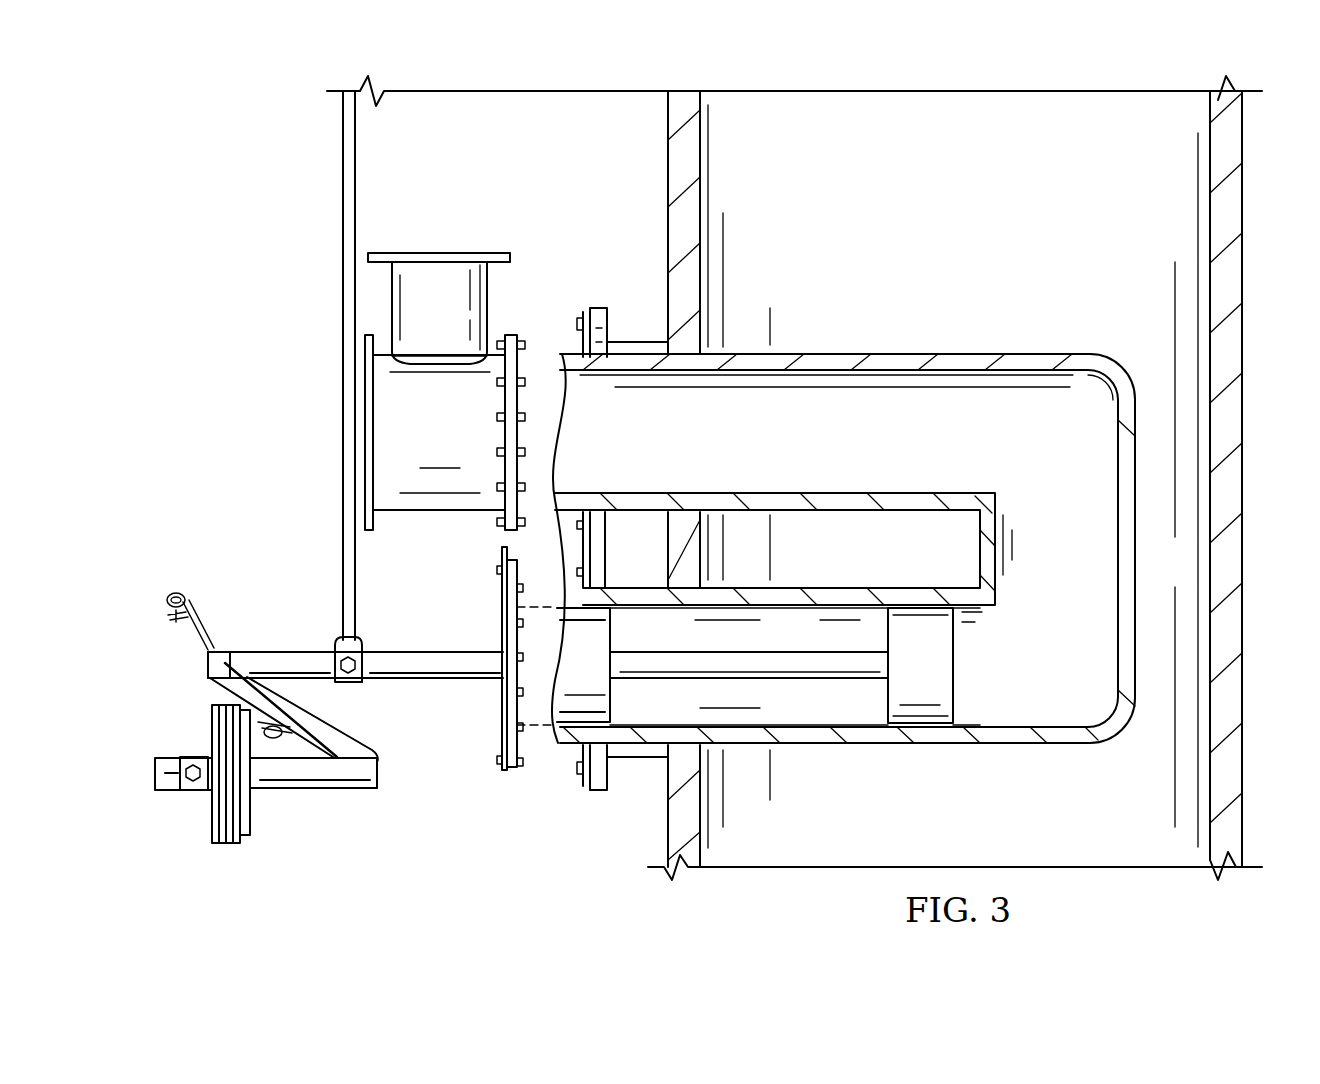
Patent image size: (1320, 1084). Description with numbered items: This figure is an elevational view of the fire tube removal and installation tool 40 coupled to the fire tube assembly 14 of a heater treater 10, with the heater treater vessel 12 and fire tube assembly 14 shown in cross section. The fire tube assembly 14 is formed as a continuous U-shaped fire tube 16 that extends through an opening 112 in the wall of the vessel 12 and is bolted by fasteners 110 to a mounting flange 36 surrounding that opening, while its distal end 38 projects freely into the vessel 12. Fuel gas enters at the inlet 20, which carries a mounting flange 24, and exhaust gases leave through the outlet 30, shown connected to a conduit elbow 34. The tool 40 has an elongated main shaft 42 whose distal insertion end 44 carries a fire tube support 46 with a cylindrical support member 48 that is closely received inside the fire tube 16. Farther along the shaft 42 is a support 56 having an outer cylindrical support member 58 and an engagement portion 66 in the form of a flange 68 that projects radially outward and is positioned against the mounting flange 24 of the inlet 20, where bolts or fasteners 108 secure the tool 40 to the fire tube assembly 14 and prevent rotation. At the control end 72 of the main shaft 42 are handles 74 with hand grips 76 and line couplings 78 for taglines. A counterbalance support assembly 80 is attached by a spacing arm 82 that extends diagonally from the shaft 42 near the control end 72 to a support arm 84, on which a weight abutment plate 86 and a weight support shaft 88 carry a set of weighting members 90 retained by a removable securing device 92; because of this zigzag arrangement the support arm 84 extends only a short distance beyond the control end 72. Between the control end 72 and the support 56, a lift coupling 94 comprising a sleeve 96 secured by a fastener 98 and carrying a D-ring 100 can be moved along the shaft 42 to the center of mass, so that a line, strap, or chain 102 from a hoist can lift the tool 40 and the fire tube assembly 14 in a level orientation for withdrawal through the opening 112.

The heater treater 10 is at (502, 198).
The heater treater vessel 12 is at (1250, 192).
The fire tube assembly 14 is at (966, 345).
The fire tube 16 is at (885, 352).
The inlet 20 is at (540, 738).
The mounting flange 24 is at (500, 745).
The outlet 30 is at (558, 418).
The conduit elbow 34 is at (437, 505).
The mounting flange 36 is at (603, 541).
The distal end 38 is at (1136, 552).
The fire tube removal and installation tool 40 is at (260, 602).
The main shaft 42 is at (400, 650).
The distal insertion end 44 is at (767, 690).
The fire tube support 46 is at (960, 655).
The cylindrical support member 48 is at (943, 688).
The support 56 is at (620, 638).
The outer cylindrical support member 58 is at (600, 695).
The engagement portion 66 is at (495, 630).
The flange 68 is at (502, 700).
The control end 72 is at (206, 665).
The handles 74 is at (205, 636).
The hand grips 76 is at (168, 617).
The line couplings 78 is at (180, 596).
The counterbalance support assembly 80 is at (390, 775).
The counterbalance support spacing arm 82 is at (350, 740).
The support arm 84 is at (335, 790).
The weight abutment plate 86 is at (251, 820).
The weight support shaft 88 is at (165, 756).
The weighting members 90 is at (212, 832).
The removable securing device 92 is at (192, 791).
The lift coupling 94 is at (368, 628).
The sleeve 96 is at (365, 676).
The fastener 98 is at (350, 684).
The D-ring 100 is at (335, 645).
The line, strap, or chain 102 is at (343, 363).
The bolts or fasteners 108 is at (497, 570).
The bolts or fasteners 110 is at (578, 325).
The opening 112 is at (690, 372).